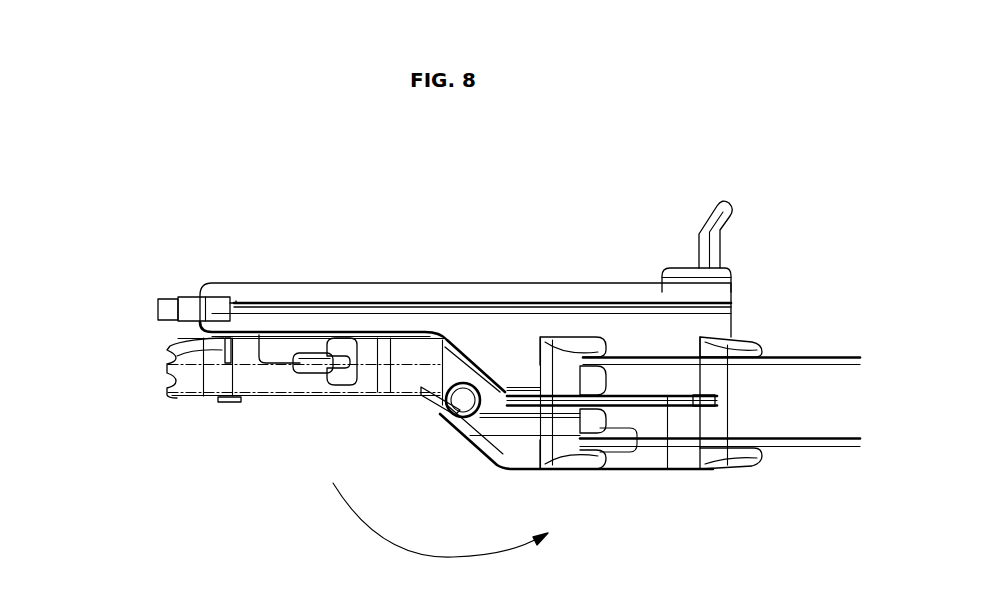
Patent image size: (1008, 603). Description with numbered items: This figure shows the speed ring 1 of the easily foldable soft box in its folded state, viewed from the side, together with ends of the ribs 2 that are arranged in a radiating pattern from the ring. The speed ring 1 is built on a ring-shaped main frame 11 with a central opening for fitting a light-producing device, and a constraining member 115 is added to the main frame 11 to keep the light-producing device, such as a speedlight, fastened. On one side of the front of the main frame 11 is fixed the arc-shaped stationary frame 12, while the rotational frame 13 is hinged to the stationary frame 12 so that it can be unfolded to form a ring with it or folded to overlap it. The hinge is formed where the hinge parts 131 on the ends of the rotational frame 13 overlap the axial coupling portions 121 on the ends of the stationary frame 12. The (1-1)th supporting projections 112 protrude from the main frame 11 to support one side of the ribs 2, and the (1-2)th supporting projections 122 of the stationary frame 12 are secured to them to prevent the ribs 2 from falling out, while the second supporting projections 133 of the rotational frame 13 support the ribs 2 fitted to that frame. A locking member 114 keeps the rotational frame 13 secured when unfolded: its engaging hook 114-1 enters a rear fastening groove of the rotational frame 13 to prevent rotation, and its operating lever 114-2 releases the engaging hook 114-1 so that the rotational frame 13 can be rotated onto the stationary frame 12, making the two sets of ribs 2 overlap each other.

The speed ring 1 is at (258, 253).
The main frame 11 is at (505, 318).
The (1-1)th supporting projections 112 is at (583, 343).
The locking member 114 is at (66, 306).
The engaging hook 114-1 is at (184, 352).
The operating lever 114-2 is at (167, 307).
The constraining member 115 is at (722, 245).
The stationary frame 12 is at (668, 458).
The axial coupling portions 121 is at (428, 356).
The (1-2)th supporting projections 122 is at (580, 460).
The rotational frame 13 is at (272, 396).
The hinge parts 131 is at (450, 427).
The second supporting projections 133 is at (345, 337).
The ribs 2 is at (818, 356).